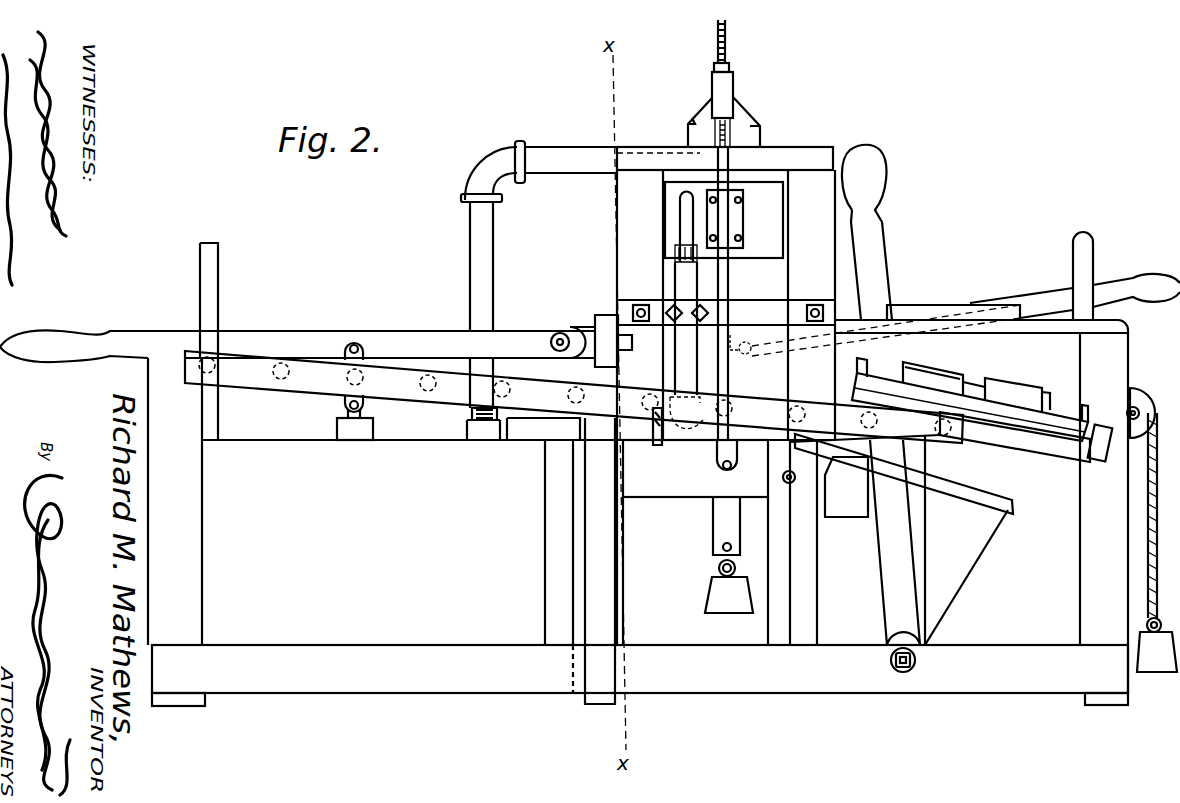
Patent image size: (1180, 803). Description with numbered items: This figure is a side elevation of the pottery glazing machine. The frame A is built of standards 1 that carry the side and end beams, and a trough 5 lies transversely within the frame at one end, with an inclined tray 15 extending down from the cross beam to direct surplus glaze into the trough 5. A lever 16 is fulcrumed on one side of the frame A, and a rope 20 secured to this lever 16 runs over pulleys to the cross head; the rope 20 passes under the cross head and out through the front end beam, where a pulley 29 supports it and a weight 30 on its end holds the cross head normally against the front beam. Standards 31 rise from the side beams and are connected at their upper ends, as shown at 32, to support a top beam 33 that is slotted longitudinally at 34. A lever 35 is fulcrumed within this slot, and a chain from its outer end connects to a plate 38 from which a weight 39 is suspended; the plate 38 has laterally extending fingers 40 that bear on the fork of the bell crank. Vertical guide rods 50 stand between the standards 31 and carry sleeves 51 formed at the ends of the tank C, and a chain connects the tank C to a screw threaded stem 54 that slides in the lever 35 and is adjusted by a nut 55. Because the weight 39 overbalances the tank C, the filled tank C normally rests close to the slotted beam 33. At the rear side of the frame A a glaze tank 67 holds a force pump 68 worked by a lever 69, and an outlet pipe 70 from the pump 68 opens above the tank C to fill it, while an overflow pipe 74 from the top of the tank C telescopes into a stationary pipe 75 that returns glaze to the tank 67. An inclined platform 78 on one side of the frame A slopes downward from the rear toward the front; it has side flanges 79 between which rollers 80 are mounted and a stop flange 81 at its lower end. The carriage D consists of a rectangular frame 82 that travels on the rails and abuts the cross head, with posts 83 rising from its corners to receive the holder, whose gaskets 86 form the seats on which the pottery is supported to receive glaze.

The standards 1 is at (200, 557).
The trough 5 is at (966, 577).
The inclined tray 15 is at (940, 485).
The lever 16 is at (876, 574).
The rope 20 is at (1145, 492).
The pulley 29 is at (1147, 402).
The weight 30 is at (1157, 542).
The standards 31 is at (622, 252).
The connection 32 is at (818, 147).
The top beam 33 is at (688, 124).
The slot 34 is at (760, 108).
The lever 35 is at (712, 95).
The plate 38 is at (715, 520).
The weight 39 is at (729, 586).
The fingers 40 is at (705, 488).
The guide rods 50 is at (732, 284).
The sleeves 51 is at (745, 205).
The screw threaded stem 54 is at (743, 41).
The nut 55 is at (729, 66).
The glaze tank 67 is at (387, 566).
The force pump 68 is at (378, 422).
The lever 69 is at (364, 342).
The outlet pipe 70 is at (483, 268).
The overflow pipe 74 is at (680, 225).
The stationary pipe 75 is at (692, 390).
The inclined platform 78 is at (455, 420).
The side flanges 79 is at (185, 372).
The rollers 80 is at (345, 386).
The stop flange 81 is at (1100, 420).
The rectangular frame 82 is at (995, 437).
The posts 83 is at (869, 367).
The gaskets 86 is at (1022, 392).
The frame A is at (476, 673).
The tank C is at (724, 220).
The carriage D is at (1065, 440).